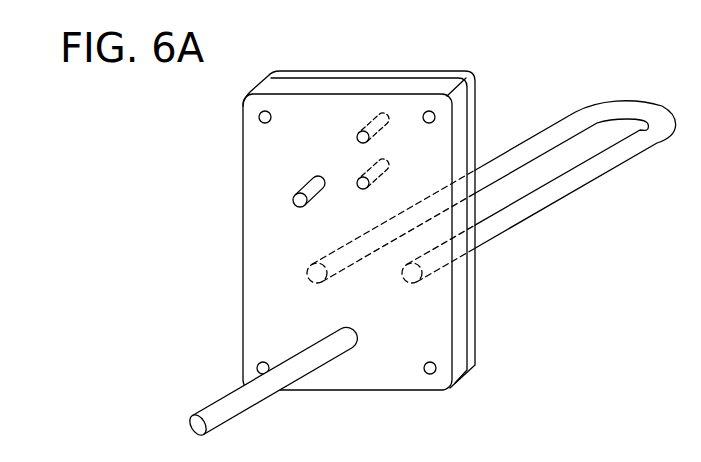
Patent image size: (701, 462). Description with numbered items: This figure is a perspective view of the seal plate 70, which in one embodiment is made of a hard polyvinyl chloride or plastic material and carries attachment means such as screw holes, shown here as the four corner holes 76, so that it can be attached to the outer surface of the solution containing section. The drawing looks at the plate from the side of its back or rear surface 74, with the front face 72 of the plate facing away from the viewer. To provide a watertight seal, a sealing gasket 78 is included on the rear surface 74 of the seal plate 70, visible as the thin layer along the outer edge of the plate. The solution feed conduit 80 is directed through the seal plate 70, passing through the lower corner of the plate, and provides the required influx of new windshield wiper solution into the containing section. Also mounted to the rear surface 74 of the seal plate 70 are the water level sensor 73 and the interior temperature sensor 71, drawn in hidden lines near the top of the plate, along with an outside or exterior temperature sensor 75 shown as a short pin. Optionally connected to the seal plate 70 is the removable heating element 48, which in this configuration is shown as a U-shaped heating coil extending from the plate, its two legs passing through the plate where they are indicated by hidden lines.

The removable heating element 48 is at (572, 188).
The seal plate 70 is at (212, 232).
The interior temperature sensor 71 is at (363, 131).
The front face of mounting plate 72 is at (256, 307).
The water level sensor 73 is at (363, 177).
The rear surface 74 is at (427, 73).
The exterior temperature sensor 75 is at (300, 186).
The mounting holes 76 is at (258, 117).
The sealing gasket 78 is at (397, 72).
The solution feed conduit 80 is at (227, 405).